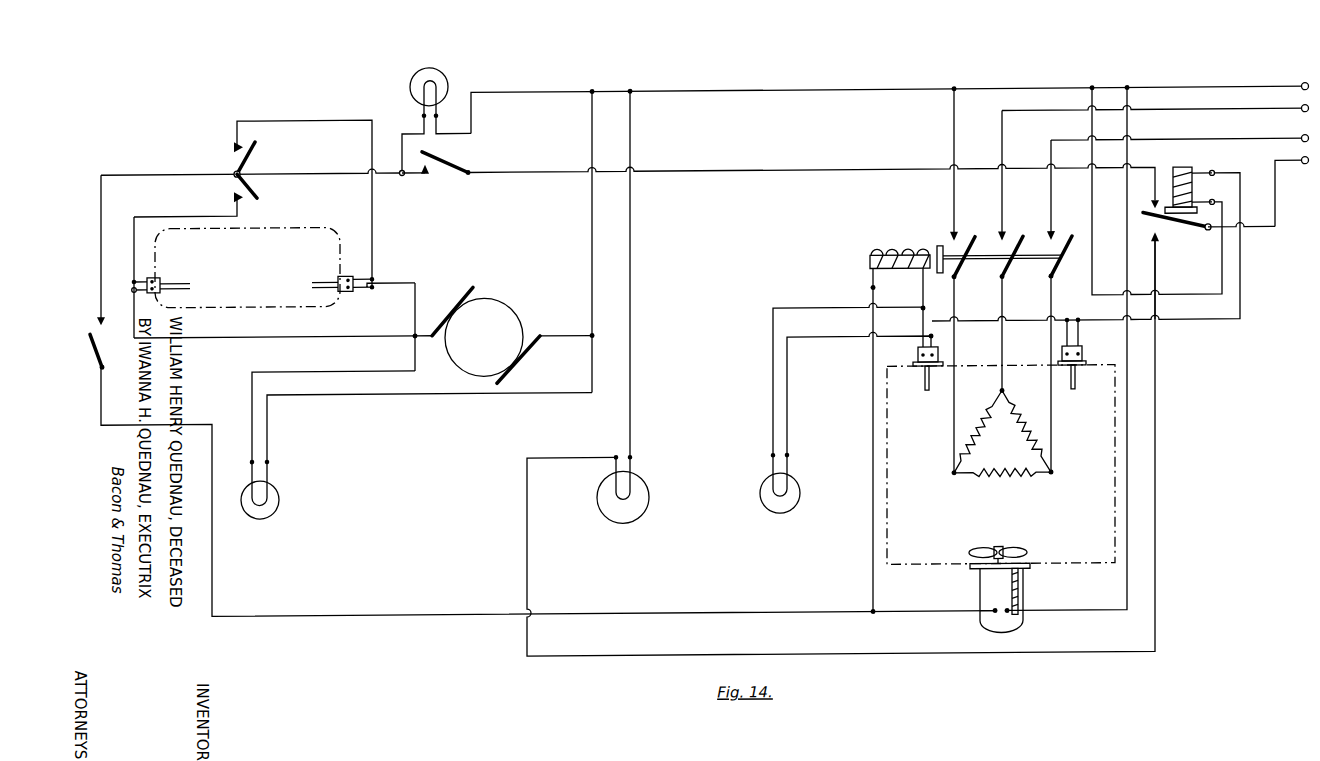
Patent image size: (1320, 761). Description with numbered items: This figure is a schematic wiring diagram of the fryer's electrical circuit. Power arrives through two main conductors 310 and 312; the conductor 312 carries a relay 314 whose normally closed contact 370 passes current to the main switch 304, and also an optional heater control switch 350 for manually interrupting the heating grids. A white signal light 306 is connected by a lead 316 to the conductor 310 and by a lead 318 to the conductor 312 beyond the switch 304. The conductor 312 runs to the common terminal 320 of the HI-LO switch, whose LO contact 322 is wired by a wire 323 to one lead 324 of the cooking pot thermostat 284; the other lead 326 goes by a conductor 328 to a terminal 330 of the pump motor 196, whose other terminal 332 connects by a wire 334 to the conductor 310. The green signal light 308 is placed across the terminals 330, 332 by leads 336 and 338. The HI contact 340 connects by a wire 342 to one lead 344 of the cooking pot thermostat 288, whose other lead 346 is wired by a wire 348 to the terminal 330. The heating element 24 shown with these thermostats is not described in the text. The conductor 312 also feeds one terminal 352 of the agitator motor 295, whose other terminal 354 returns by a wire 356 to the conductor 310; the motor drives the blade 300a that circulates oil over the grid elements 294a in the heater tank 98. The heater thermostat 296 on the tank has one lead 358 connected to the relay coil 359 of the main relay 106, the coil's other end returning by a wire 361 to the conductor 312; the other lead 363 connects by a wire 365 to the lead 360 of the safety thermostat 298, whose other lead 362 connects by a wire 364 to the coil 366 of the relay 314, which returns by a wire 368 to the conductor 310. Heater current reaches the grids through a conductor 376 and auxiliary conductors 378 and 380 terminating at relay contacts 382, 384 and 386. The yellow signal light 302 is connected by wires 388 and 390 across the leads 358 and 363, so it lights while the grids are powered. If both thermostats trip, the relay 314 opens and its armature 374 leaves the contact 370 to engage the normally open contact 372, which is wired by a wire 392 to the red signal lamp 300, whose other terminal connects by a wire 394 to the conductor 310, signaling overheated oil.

The heating element 24 is at (313, 230).
The heater tank 98 is at (915, 571).
The main relay 106 is at (866, 262).
The pump motor 196 is at (490, 302).
The 325° F. cooking pot thermostat 284 is at (176, 283).
The 365° F. cooking pot thermostat 288 is at (312, 283).
The grid elements 294a is at (1003, 432).
The agitator motor 295 is at (1027, 622).
The heater thermostat 296 is at (927, 398).
The safety thermostat 298 is at (1073, 398).
The red signal lamp 300 is at (650, 500).
The blade 300a is at (1028, 556).
The yellow signal light 302 is at (800, 490).
The main switch 304 is at (456, 166).
The white signal light 306 is at (410, 78).
The green signal light 308 is at (280, 490).
The main conductor 310 is at (795, 96).
The main conductor 312 is at (131, 176).
The relay 314 is at (1196, 178).
The lead 316 is at (510, 96).
The lead 318 is at (400, 136).
The common terminal 320 is at (246, 170).
The LO contact 322 is at (243, 200).
The wire 323 is at (180, 218).
The lead 324 is at (133, 282).
The lead 326 is at (140, 295).
The conductor 328 is at (313, 339).
The terminal 330 is at (413, 341).
The terminal 332 is at (590, 338).
The wire 334 is at (590, 238).
The lead 336 is at (333, 374).
The lead 338 is at (388, 397).
The HI contact 340 is at (232, 172).
The wire 342 is at (283, 123).
The lead 344 is at (372, 280).
The lead 346 is at (365, 292).
The wire 348 is at (418, 290).
The heater control switch 350 is at (104, 350).
The terminal 352 is at (992, 620).
The terminal 354 is at (1017, 604).
The wire 356 is at (1130, 506).
The lead 358 is at (922, 322).
The relay coil 359 is at (905, 255).
The lead 360 is at (1060, 330).
The wire 361 is at (872, 390).
The lead 362 is at (1082, 340).
The lead 363 is at (940, 352).
The wire 364 is at (1218, 330).
The wire 365 is at (976, 326).
The relay coil 366 is at (1170, 192).
The wire 368 is at (1090, 104).
The normally closed contact 370 is at (1142, 222).
The normally open contact 372 is at (1158, 250).
The relay armature 374 is at (1172, 226).
The conductor 376 is at (952, 200).
The auxiliary conductor 378 is at (1000, 200).
The auxiliary conductor 380 is at (1049, 212).
The relay contact 382 is at (957, 244).
The relay contact 384 is at (1005, 244).
The relay contact 386 is at (1053, 244).
The wire 388 is at (802, 314).
The wire 390 is at (843, 343).
The wire 392 is at (255, 190).
The wire 394 is at (632, 281).